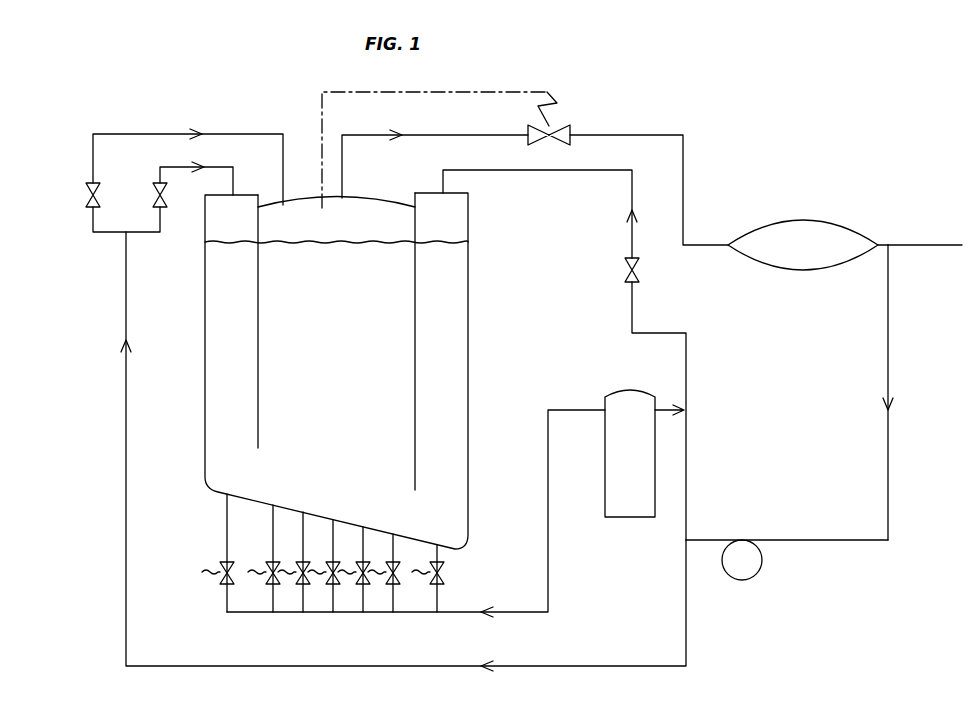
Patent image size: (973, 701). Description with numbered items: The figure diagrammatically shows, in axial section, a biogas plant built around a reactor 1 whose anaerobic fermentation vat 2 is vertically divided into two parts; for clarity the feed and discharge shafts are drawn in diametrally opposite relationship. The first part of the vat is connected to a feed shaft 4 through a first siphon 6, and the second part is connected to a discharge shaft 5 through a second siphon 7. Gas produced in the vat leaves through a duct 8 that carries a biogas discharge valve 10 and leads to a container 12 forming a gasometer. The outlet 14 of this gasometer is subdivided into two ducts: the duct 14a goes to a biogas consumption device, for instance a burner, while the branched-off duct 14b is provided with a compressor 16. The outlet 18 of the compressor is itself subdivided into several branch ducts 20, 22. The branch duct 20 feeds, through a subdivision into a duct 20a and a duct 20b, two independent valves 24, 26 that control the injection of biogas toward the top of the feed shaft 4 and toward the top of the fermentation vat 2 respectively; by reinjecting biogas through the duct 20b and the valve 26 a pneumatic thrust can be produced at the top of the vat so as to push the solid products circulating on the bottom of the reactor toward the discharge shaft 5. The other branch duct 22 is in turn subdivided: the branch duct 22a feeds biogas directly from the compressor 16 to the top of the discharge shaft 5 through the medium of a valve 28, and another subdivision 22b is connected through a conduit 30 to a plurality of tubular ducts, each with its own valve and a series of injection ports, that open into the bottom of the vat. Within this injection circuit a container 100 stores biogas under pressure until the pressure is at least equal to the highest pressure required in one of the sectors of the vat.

The reactor 1 is at (203, 408).
The anaerobic fermentation vat 2 is at (295, 460).
The feed shaft 4 is at (222, 310).
The discharge shaft 5 is at (470, 336).
The first siphon 6 is at (255, 465).
The second siphon 7 is at (415, 510).
The duct 8 is at (433, 137).
The biogas discharge valve 10 is at (572, 133).
The container 12 is at (803, 245).
The outlet 14 is at (885, 243).
The duct 14a is at (934, 243).
The branched-off duct 14b is at (888, 320).
The compressor 16 is at (742, 560).
The outlet 18 is at (715, 540).
The branch duct 20 is at (688, 636).
The subdivision of branch duct 20a is at (182, 168).
The duct for reinjection of biogas 20b is at (88, 235).
The branch duct 22 is at (688, 450).
The branch duct 22a is at (688, 352).
The subdivision 22b is at (686, 410).
The valve 24 is at (152, 192).
The valve 26 is at (85, 190).
The valve 28 is at (640, 270).
The conduit 30 is at (518, 612).
The container 100 is at (632, 453).